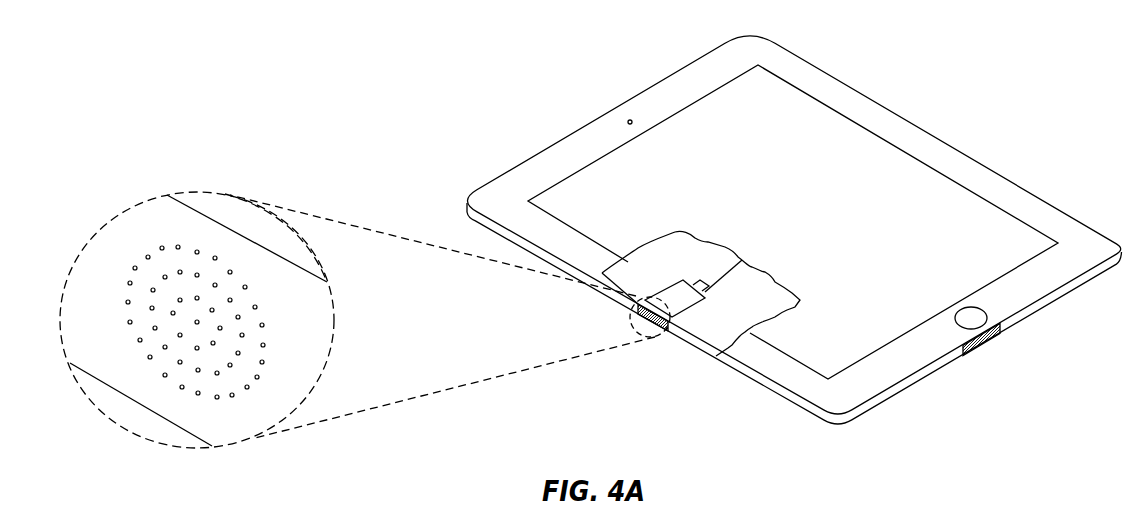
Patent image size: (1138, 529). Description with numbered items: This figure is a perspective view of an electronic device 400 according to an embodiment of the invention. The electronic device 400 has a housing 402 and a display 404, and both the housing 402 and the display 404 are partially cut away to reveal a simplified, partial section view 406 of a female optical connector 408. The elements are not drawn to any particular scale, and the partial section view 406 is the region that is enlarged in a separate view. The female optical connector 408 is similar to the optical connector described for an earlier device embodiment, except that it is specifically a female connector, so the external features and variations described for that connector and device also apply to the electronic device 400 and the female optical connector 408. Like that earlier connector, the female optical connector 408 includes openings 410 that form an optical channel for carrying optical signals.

The electronic device 400 is at (591, 242).
The housing 402 is at (1040, 196).
The display 404 is at (713, 123).
The simplified, partial section view 406 is at (788, 310).
The female optical connector 408 is at (235, 230).
The openings 410 is at (133, 255).